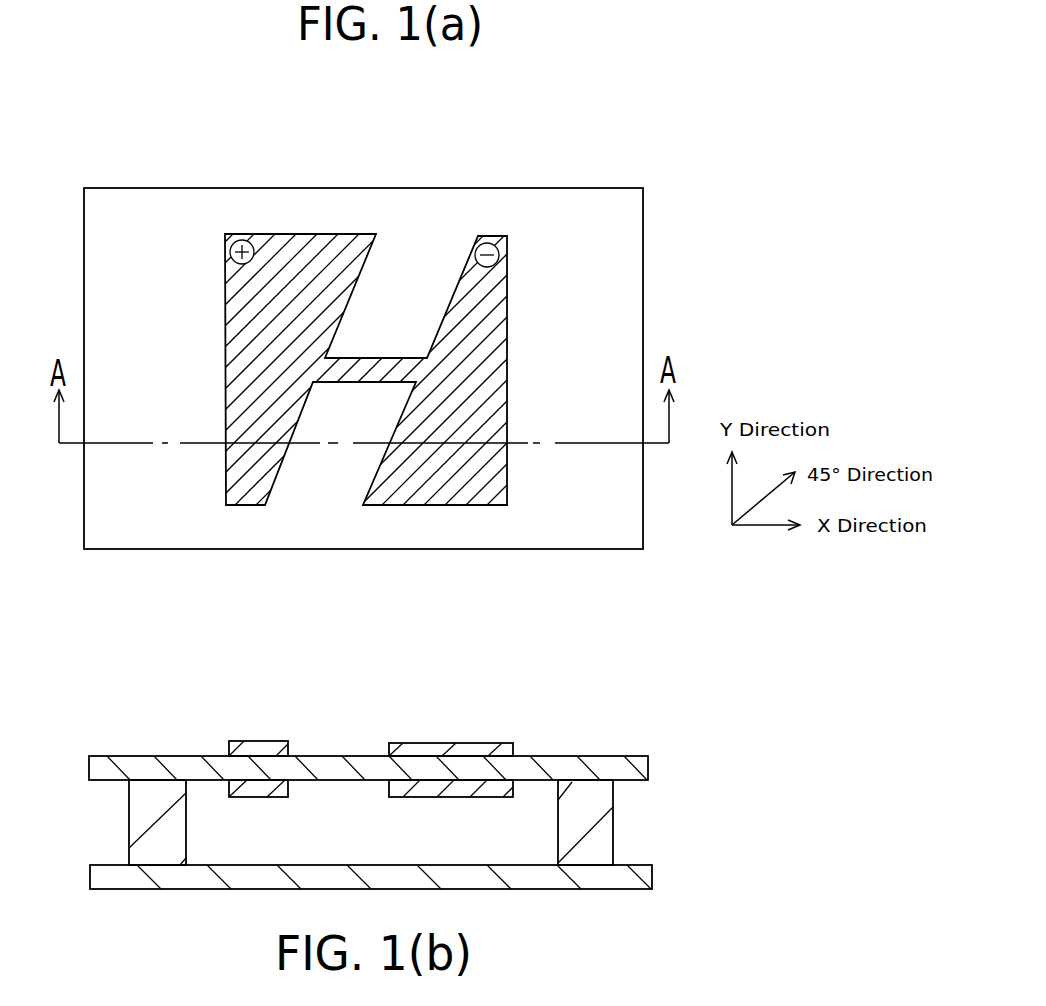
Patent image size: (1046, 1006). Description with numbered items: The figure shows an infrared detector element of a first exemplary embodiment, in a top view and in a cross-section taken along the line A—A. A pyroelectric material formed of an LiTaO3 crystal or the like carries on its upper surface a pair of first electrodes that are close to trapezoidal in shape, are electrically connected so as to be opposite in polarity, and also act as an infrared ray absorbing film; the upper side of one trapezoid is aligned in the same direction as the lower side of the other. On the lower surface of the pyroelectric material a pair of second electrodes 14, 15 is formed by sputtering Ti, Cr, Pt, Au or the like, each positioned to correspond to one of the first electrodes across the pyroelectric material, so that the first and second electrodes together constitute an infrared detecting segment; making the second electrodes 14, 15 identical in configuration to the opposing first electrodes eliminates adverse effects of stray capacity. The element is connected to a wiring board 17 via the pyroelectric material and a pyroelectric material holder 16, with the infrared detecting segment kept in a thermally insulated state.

The second electrode 14 is at (277, 788).
The second electrode 15 is at (450, 787).
The pyroelectric material holder 16 is at (158, 792).
The wiring board 17 is at (653, 872).